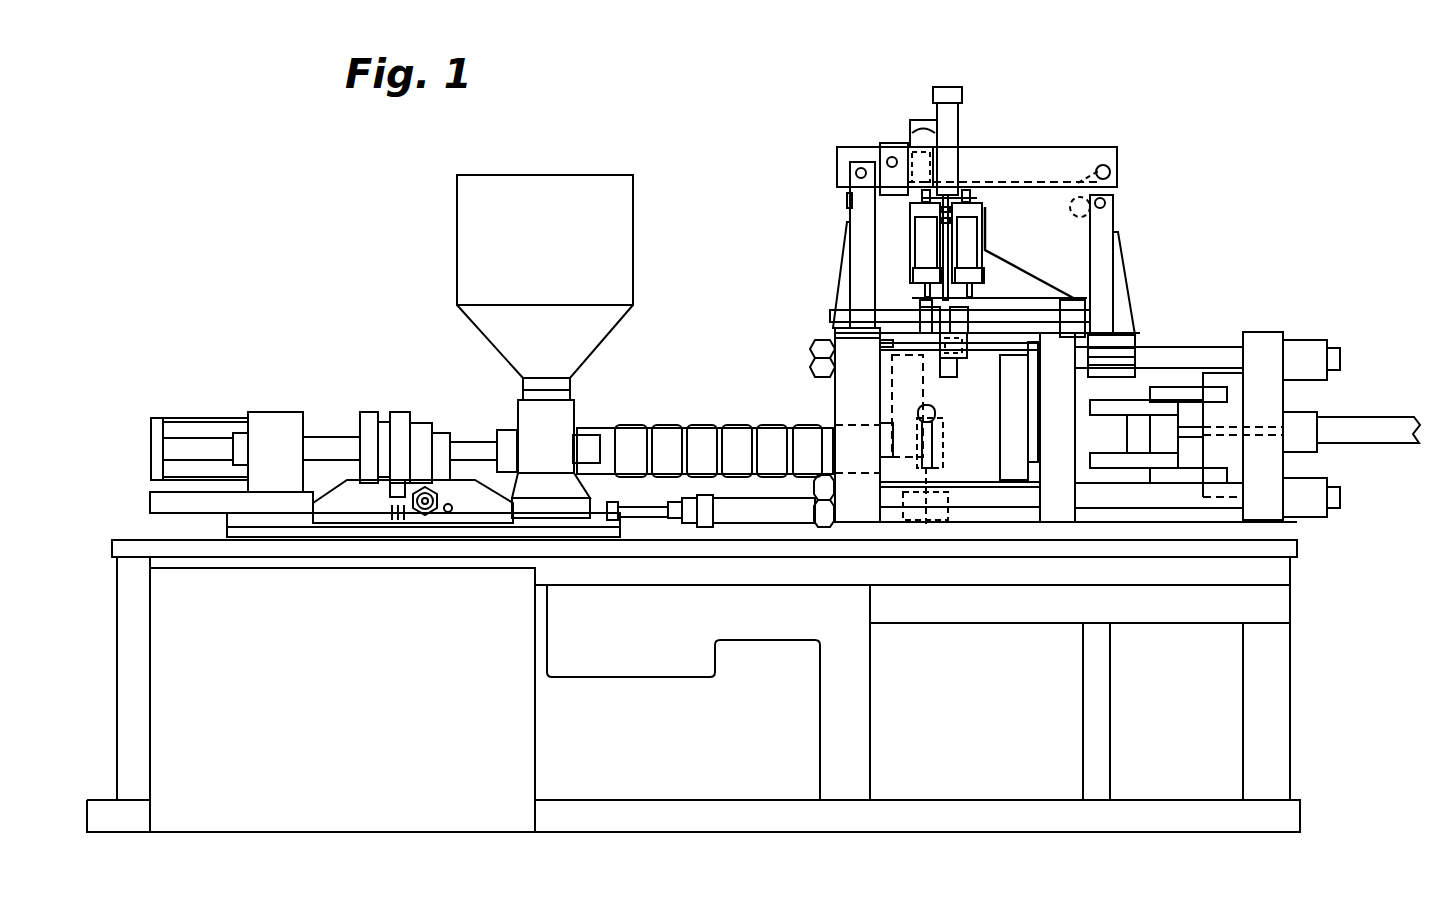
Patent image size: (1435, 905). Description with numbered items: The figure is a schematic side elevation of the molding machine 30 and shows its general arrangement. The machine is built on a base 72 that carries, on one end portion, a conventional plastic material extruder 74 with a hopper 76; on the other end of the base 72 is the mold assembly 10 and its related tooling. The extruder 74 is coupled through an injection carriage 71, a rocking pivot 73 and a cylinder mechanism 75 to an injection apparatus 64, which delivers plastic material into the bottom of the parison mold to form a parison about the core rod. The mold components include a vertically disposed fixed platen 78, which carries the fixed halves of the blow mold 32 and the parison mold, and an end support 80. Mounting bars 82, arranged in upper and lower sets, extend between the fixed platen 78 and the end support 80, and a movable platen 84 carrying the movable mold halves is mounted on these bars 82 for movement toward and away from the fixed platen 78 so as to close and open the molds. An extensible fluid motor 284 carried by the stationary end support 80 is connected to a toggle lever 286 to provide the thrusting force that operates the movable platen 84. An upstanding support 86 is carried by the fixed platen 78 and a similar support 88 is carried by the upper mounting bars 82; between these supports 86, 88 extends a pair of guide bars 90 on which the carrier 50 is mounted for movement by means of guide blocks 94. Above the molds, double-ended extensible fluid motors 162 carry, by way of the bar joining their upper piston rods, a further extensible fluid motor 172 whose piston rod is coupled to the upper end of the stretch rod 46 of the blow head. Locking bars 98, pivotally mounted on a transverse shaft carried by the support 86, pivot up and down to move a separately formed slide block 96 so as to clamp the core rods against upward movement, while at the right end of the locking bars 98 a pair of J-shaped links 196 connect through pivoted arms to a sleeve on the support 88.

The mold assembly 10 is at (1134, 110).
The molding machine 30 is at (684, 344).
The blow mold 32 is at (900, 383).
The stretch rod 46 is at (950, 248).
The carrier 50 is at (996, 257).
The injection apparatus 64 is at (928, 410).
The injection carriage 71 is at (443, 530).
The base 72 is at (693, 686).
The rocking pivot 73 is at (430, 480).
The plastic material extruder 74 is at (668, 432).
The cylinder mechanism 75 is at (753, 512).
The hopper 76 is at (545, 287).
The fixed platen 78 is at (853, 403).
The end support 80 is at (1258, 343).
The mounting bars 82 is at (1175, 355).
The movable platen 84 is at (1057, 500).
The upstanding support 86 is at (843, 272).
The support 88 is at (1127, 307).
The guide bars 90 is at (1013, 322).
The guide blocks 94 is at (933, 307).
The slide block 96 is at (893, 138).
The locking bars 98 is at (1047, 156).
The extensible fluid motors 162 is at (965, 240).
The extensible fluid motor 172 is at (954, 118).
The J-shaped links 196 is at (1070, 199).
The extensible fluid motor 284 is at (1367, 425).
The toggle lever 286 is at (1182, 490).